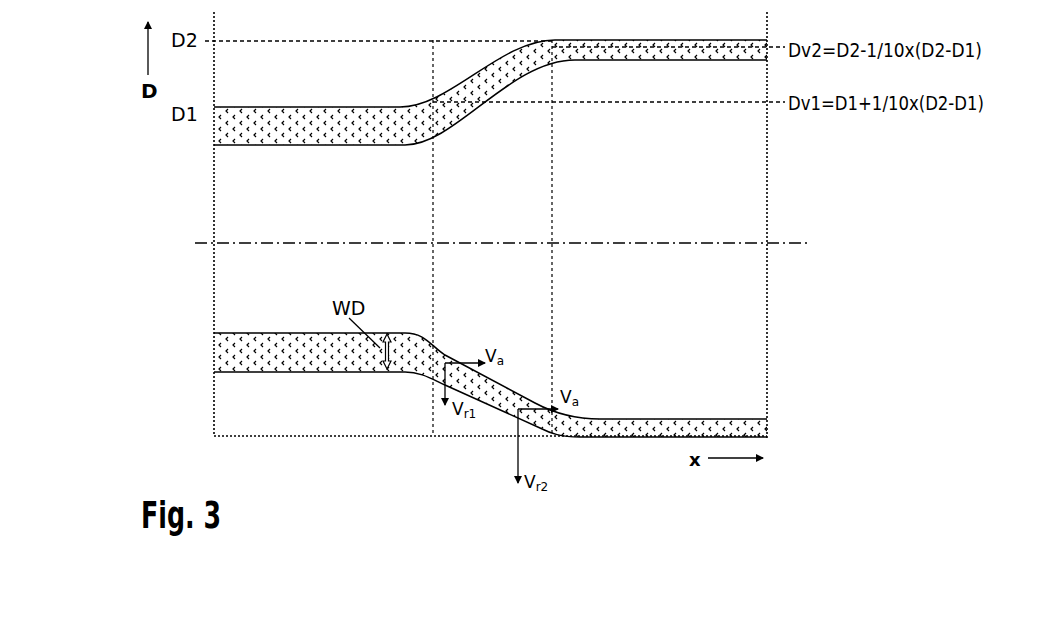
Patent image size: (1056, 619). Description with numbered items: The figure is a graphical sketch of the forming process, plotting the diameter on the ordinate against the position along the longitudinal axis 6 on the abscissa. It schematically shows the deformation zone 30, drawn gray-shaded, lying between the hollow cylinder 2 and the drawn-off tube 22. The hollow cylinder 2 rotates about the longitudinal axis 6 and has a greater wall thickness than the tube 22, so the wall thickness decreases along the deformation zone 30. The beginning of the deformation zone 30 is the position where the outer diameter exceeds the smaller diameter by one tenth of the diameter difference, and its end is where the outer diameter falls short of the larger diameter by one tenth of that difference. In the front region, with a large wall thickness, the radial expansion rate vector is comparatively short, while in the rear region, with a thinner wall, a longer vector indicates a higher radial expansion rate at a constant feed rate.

The hollow cylinder 2 is at (216, 346).
The longitudinal axis 6 is at (778, 243).
The tube 22 is at (767, 428).
The deformation zone 30 is at (489, 204).